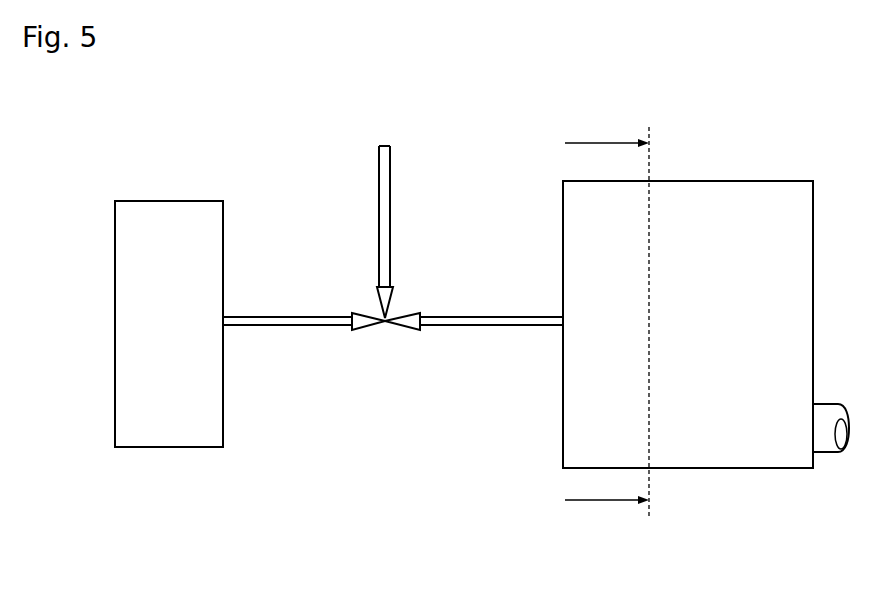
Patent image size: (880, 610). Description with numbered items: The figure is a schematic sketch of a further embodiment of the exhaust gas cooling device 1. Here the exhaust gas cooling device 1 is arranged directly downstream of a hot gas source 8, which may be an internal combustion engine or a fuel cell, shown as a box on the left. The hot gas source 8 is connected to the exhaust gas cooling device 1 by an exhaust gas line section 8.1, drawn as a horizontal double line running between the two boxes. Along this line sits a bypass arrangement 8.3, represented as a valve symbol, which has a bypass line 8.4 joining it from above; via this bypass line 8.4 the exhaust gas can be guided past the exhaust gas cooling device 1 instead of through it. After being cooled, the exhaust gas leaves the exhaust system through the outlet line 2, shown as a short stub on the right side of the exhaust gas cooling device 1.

The exhaust gas cooling device 1 is at (716, 326).
The outlet line 2 is at (823, 445).
The hot gas source 8 is at (178, 326).
The exhaust gas line section 8.1 is at (248, 326).
The bypass arrangement 8.3 is at (381, 336).
The bypass line 8.4 is at (379, 237).